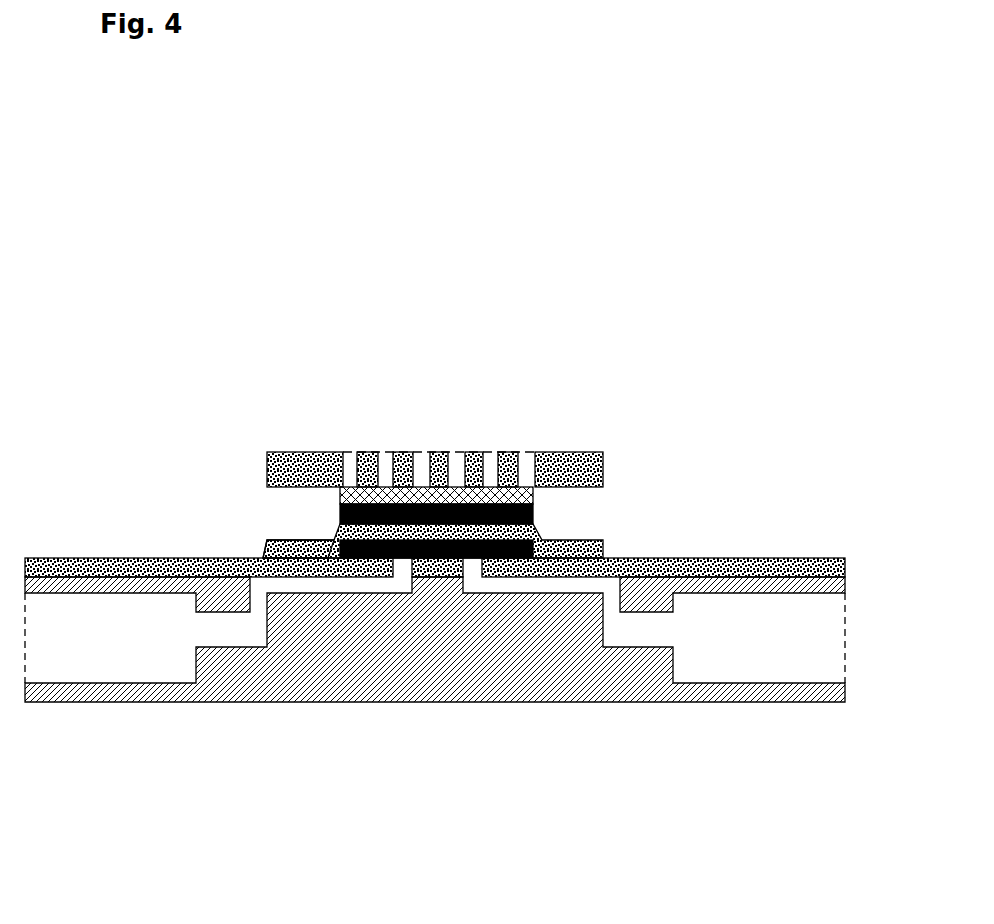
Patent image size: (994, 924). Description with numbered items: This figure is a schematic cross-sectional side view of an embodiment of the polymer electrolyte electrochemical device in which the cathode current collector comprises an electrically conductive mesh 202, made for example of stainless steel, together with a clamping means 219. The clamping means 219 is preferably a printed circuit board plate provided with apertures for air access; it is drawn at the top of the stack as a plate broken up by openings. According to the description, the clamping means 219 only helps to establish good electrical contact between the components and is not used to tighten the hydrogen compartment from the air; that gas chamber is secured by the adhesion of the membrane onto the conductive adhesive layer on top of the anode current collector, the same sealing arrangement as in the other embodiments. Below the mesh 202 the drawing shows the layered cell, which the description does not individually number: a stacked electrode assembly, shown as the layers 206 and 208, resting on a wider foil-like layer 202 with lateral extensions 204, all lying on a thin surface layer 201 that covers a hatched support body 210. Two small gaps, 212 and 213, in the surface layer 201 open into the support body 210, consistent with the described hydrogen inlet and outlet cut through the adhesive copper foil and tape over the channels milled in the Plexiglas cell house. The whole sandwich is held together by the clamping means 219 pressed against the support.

The substrate surface layer 201 is at (718, 562).
The electrically conductive mesh 202 is at (605, 462).
The contact pad 204 is at (265, 542).
The separator layer 206 is at (340, 522).
The active layer 208 is at (533, 512).
The substrate body 210 is at (437, 678).
The via opening 212 is at (398, 580).
The via opening 213 is at (470, 580).
The clamping means 219 is at (560, 467).